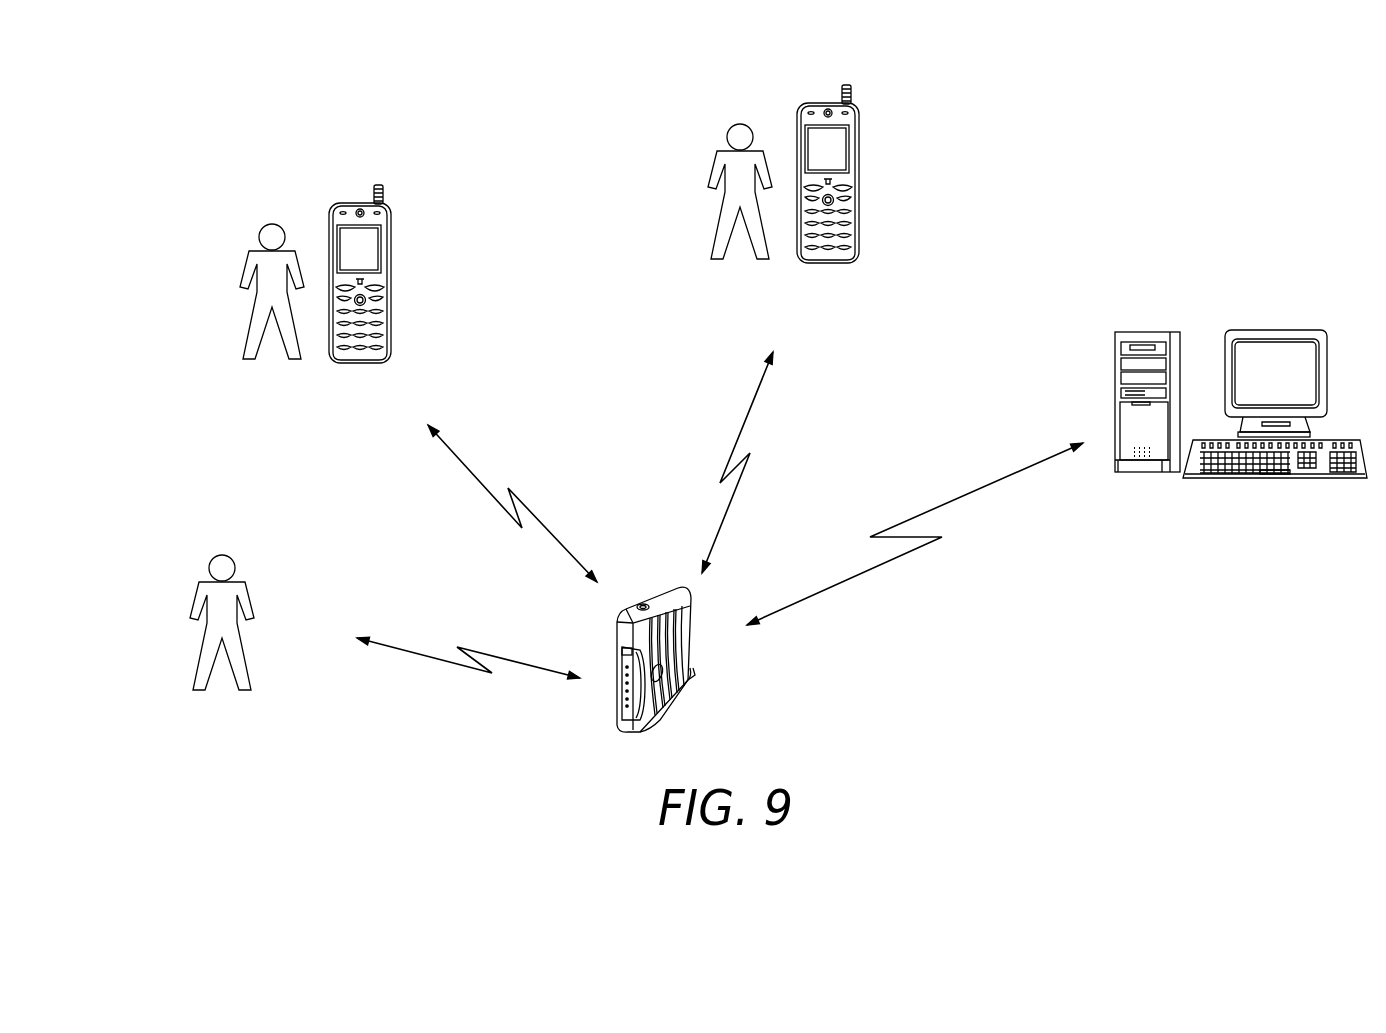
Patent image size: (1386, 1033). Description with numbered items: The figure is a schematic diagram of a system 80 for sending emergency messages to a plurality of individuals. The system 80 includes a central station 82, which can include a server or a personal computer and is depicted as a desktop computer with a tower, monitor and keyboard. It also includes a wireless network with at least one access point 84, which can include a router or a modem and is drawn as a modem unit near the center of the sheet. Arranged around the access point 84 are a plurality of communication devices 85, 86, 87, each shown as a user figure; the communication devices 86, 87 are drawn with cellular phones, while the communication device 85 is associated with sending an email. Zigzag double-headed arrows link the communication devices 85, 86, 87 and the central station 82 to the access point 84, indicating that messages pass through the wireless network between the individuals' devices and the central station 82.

The system 80 is at (1212, 148).
The central station 82 is at (1186, 310).
The access point 84 is at (651, 594).
The communication device 85 is at (214, 556).
The communication device 86 is at (352, 203).
The communication device 87 is at (820, 103).